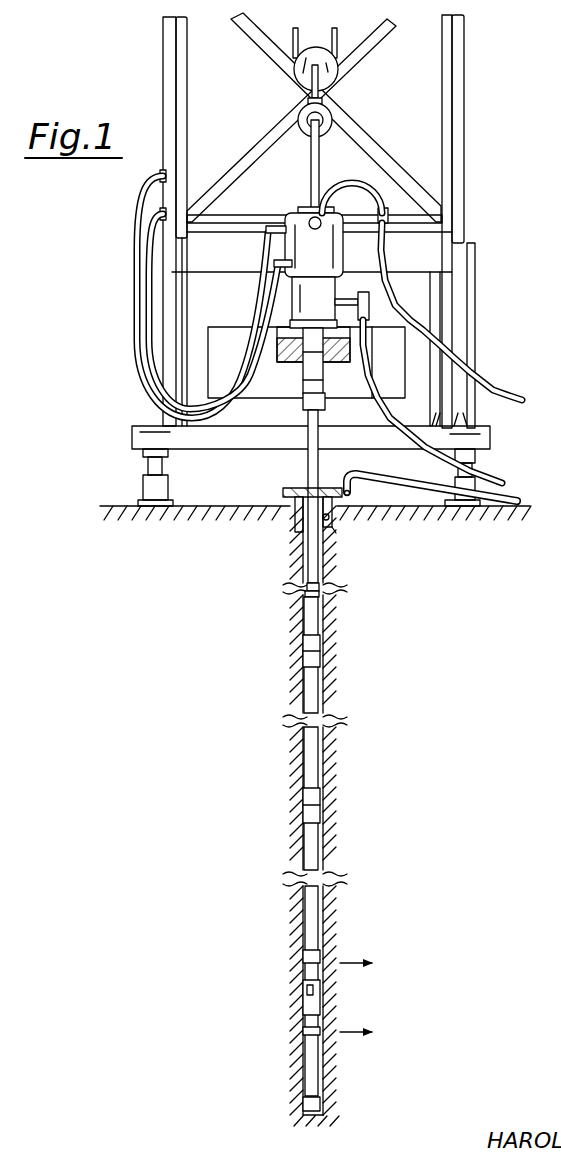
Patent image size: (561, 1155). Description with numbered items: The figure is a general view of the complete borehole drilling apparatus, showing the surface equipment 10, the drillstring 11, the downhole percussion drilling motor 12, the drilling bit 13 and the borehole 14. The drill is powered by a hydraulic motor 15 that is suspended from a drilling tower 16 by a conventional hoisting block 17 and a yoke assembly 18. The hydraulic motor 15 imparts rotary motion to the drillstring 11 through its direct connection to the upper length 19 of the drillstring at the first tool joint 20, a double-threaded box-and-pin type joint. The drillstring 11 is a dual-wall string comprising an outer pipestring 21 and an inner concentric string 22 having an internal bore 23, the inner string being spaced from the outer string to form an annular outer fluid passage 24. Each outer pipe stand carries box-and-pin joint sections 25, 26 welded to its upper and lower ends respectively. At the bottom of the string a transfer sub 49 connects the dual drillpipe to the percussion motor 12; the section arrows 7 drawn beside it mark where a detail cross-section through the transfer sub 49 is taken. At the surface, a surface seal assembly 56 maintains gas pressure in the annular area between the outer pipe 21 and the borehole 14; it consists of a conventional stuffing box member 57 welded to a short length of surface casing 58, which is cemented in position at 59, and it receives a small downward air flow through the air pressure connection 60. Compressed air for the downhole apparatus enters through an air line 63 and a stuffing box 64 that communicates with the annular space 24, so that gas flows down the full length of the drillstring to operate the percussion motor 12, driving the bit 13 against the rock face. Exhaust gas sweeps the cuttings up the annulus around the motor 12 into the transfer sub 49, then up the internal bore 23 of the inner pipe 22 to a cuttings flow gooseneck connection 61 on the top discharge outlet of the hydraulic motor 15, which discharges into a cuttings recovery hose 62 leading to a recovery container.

The section line 7- 7 is at (365, 996).
The surface equipment 10 is at (283, 379).
The drillstring 11 is at (313, 555).
The percussion drilling motor 12 is at (310, 1066).
The drilling bit 13 is at (320, 1108).
The borehole 14 is at (320, 910).
The hydraulic motor 15 is at (322, 253).
The drilling tower 16 is at (465, 160).
The hoisting block 17 is at (334, 76).
The yoke assembly 18 is at (312, 145).
The upper length of the drillstring 19 is at (319, 455).
The first tool joint 20 is at (324, 393).
The outer pipestring 21 is at (320, 578).
The inner concentric string 22 is at (322, 594).
The internal bore 23 is at (316, 603).
The annular outer fluid passage 24 is at (300, 603).
The box-and-pin joint section 25 is at (303, 400).
The box-and-pin joint section 26 is at (315, 648).
The transfer sub 49 is at (305, 998).
The surface seal assembly 56 is at (297, 485).
The stuffing box member 57 is at (283, 490).
The surface casing 58 is at (330, 520).
The cement 59 is at (336, 533).
The air pressure connection 60 is at (368, 478).
The cuttings flow gooseneck connection 61 is at (378, 175).
The cuttings recovery hose 62 is at (389, 253).
The air line 63 is at (366, 340).
The stuffing box 64 is at (290, 303).